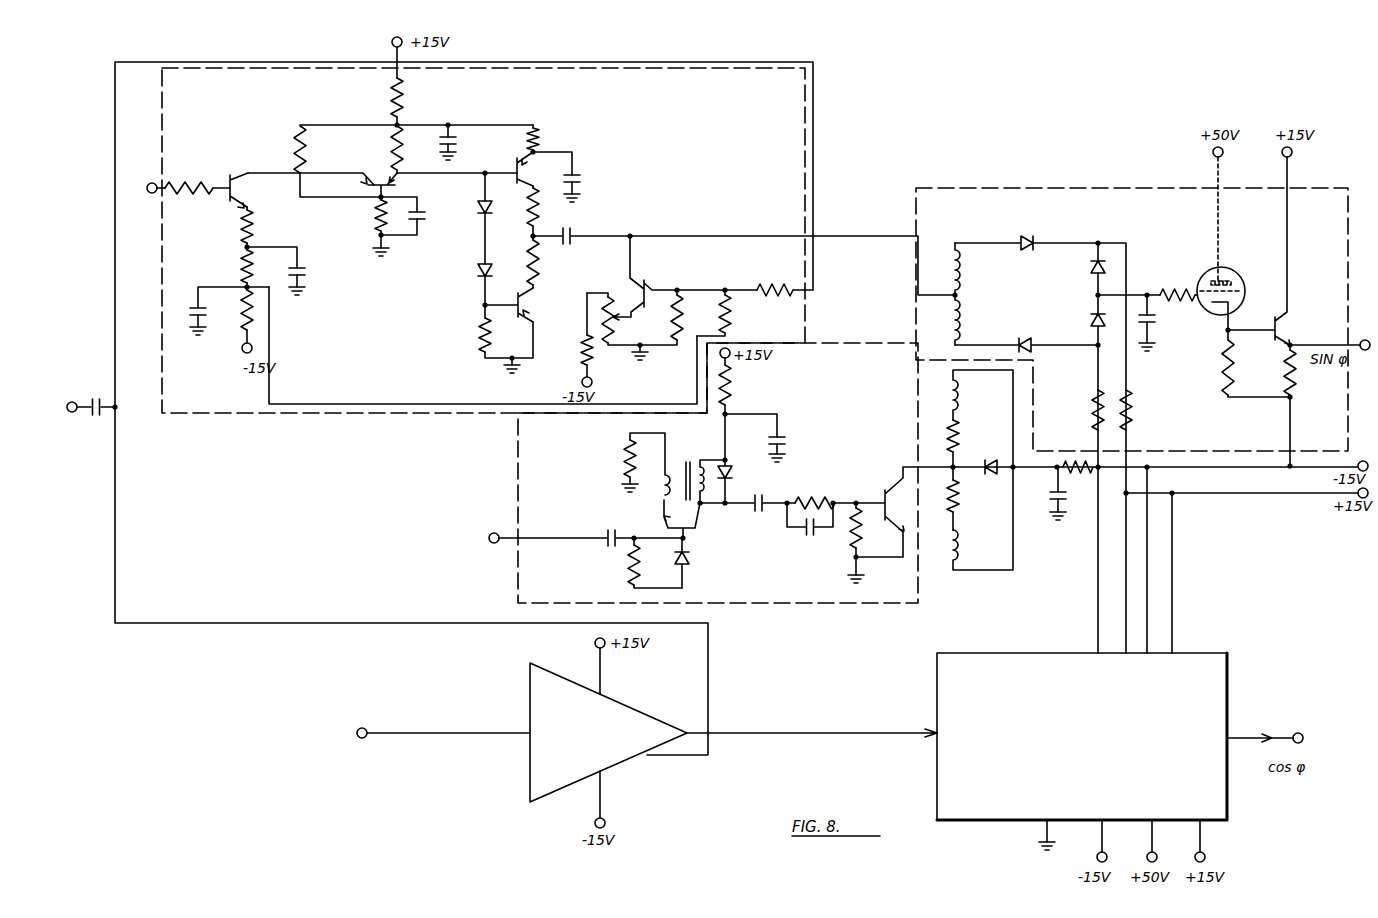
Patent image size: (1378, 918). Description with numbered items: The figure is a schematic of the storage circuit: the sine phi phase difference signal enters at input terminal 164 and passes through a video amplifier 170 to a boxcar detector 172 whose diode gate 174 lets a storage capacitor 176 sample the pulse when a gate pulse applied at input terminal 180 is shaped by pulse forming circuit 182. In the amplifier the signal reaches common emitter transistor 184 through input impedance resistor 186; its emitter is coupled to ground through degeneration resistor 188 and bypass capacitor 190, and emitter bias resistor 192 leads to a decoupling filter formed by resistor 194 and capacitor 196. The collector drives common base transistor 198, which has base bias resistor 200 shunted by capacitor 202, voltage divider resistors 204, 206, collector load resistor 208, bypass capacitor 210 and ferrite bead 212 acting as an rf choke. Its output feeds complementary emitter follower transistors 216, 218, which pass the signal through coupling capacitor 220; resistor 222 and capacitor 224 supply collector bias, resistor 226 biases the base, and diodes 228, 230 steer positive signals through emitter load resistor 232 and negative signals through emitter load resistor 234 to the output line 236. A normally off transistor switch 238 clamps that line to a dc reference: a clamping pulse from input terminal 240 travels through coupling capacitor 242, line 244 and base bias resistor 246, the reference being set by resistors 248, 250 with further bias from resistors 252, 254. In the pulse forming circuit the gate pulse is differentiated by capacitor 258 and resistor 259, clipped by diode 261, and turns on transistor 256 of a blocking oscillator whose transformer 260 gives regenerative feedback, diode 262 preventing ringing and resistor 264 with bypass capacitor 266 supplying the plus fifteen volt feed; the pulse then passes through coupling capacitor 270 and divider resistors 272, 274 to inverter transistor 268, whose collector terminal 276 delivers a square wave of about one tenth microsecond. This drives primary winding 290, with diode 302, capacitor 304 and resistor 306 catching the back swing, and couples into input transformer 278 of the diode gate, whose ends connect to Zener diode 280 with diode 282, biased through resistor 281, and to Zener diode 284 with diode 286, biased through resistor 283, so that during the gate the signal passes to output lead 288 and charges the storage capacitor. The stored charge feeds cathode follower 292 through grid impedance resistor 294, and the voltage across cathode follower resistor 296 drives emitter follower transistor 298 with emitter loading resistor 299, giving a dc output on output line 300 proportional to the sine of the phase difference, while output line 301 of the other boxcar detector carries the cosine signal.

The input terminal 164 is at (152, 194).
The video amplifier 170 is at (650, 72).
The boxcar detector 172 is at (1001, 188).
The diode gate 174 is at (1066, 302).
The storage capacitor 176 is at (1157, 321).
The input terminal 180 is at (560, 538).
The pulse forming circuit 182 is at (518, 437).
The common emitter transistor 184 is at (236, 178).
The input impedance resistor 186 is at (205, 183).
The degeneration resistor 188 is at (254, 233).
The bypass capacitor 190 is at (303, 266).
The emitter bias resistor 192 is at (243, 263).
The resistor 194 is at (242, 332).
The capacitor 196 is at (190, 305).
The common base transistor 198 is at (380, 176).
The base bias resistor 200 is at (376, 212).
The capacitor 202 is at (420, 224).
The voltage divider resistor 204 is at (404, 114).
The voltage divider resistor 206 is at (337, 161).
The collector load resistor 208 is at (402, 143).
The bypass capacitor 210 is at (452, 140).
The ferrite bead 212 is at (366, 181).
The emitter follower transistor 216 is at (515, 167).
The emitter follower transistor 218 is at (524, 311).
The coupling capacitor 220 is at (567, 245).
The resistor 222 is at (541, 141).
The capacitor 224 is at (578, 177).
The resistor 226 is at (484, 331).
The diode 228 is at (478, 209).
The diode 230 is at (479, 273).
The emitter load resistor 232 is at (545, 226).
The emitter load resistor 234 is at (538, 270).
The output line 236 is at (730, 222).
The normally OFF transistor switch 238 is at (648, 283).
The input terminal 240 is at (72, 413).
The coupling capacitor 242 is at (99, 398).
The line 244 is at (115, 325).
The base bias resistor 246 is at (767, 288).
The resistor 248 is at (584, 336).
The voltage divider resistor 250 is at (611, 350).
The resistor 252 is at (681, 298).
The resistor 254 is at (733, 321).
The normally OFF transistor 256 is at (695, 531).
The capacitor 258 is at (613, 534).
The resistor 259 is at (629, 566).
The transformer 260 is at (686, 460).
The diode 261 is at (690, 558).
The diode 262 is at (728, 470).
The resistor 264 is at (733, 393).
The bypass capacitor 266 is at (786, 441).
The common emitter inverter transistor 268 is at (880, 487).
The coupling capacitor 270 is at (761, 498).
The resistor 272 is at (812, 500).
The resistor 274 is at (853, 541).
The collector terminal 276 is at (940, 468).
The input transformer 278 is at (958, 291).
The Zener diode 280 is at (1033, 240).
The resistor 281 is at (1133, 406).
The diode 282 is at (1104, 265).
The resistor 283 is at (1093, 396).
The Zener diode 284 is at (1020, 340).
The diode 286 is at (1090, 322).
The output lead 288 is at (1145, 290).
The primary winding 290 is at (960, 403).
The cathode follower 292 is at (1234, 272).
The grid impedance resistor 294 is at (1177, 285).
The cathode follower resistor 296 is at (1224, 357).
The emitter follower transistor 298 is at (1281, 326).
The emitter loading resistor 299 is at (1286, 371).
The output line 300 is at (1348, 345).
The output line 301 is at (1272, 738).
The diode 302 is at (993, 460).
The capacitor 304 is at (1050, 503).
The resistor 306 is at (1070, 460).